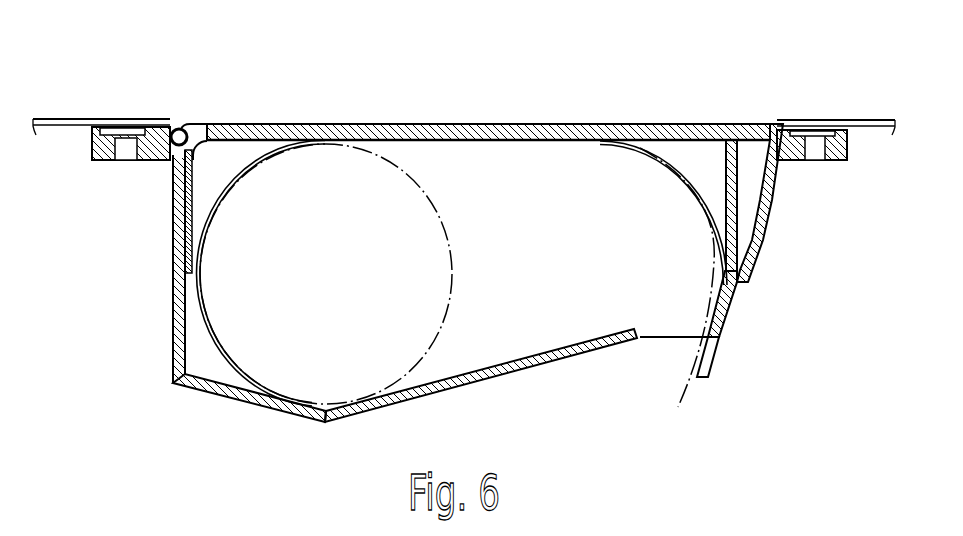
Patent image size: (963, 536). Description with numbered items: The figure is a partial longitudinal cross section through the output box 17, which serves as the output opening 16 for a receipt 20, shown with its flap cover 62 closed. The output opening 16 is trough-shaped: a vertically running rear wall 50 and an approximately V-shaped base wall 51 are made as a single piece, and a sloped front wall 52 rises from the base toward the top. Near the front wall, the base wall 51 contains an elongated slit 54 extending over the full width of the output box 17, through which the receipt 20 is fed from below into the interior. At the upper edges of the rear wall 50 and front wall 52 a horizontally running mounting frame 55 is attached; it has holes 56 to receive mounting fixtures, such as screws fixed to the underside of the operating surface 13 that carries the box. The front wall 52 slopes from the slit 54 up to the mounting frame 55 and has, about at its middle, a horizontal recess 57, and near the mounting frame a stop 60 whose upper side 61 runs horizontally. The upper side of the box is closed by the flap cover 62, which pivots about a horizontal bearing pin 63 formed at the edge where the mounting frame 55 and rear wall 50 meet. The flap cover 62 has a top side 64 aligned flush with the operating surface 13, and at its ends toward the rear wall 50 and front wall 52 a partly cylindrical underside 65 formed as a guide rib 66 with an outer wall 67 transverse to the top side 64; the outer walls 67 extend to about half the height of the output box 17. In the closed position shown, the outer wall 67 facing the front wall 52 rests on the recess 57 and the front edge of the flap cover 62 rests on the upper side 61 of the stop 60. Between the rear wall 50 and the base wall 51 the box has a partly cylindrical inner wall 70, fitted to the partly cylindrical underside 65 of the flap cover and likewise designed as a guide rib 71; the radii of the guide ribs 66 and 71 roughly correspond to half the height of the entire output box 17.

The operating surface 13 is at (72, 115).
The output opening 16 is at (580, 78).
The output box 17 is at (545, 300).
The receipt 20 is at (452, 257).
The rear wall 50 is at (178, 235).
The base wall 51 is at (455, 392).
The front wall 52 is at (768, 223).
The slit 54 is at (662, 345).
The mounting frame 55 is at (158, 126).
The holes 56 is at (120, 130).
The recess 57 is at (740, 290).
The stop 60 is at (765, 180).
The upper side of stop 61 is at (762, 128).
The flap cover 62 is at (330, 127).
The bearing pin 63 is at (180, 128).
The top side of flap cover 64 is at (405, 122).
The partly cylindrical underside 65 is at (228, 160).
The guide rib 66 is at (213, 170).
The outer wall 67 is at (180, 188).
The inner wall 70 is at (218, 368).
The guide rib 71 is at (197, 343).